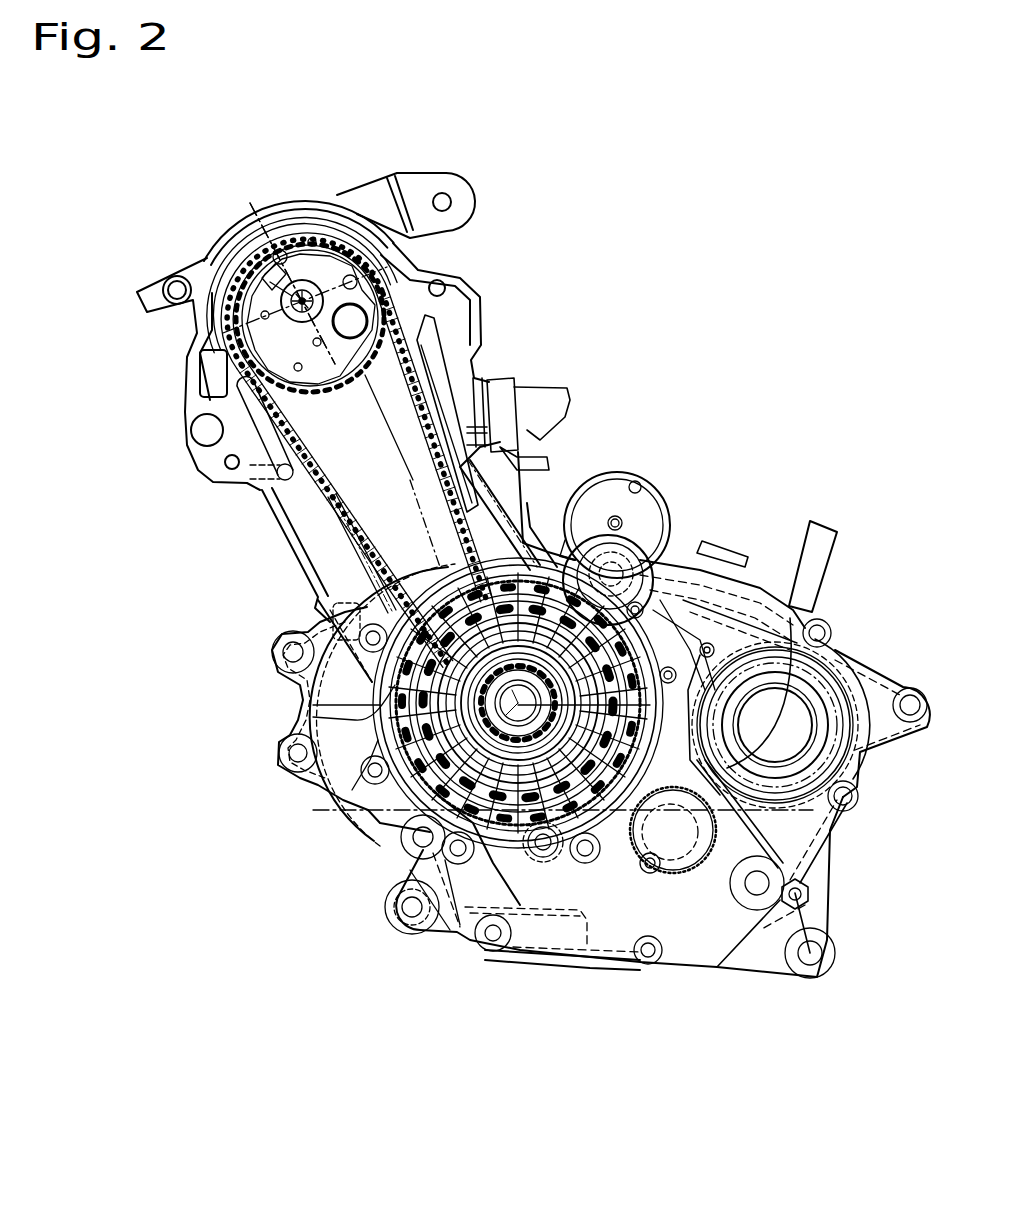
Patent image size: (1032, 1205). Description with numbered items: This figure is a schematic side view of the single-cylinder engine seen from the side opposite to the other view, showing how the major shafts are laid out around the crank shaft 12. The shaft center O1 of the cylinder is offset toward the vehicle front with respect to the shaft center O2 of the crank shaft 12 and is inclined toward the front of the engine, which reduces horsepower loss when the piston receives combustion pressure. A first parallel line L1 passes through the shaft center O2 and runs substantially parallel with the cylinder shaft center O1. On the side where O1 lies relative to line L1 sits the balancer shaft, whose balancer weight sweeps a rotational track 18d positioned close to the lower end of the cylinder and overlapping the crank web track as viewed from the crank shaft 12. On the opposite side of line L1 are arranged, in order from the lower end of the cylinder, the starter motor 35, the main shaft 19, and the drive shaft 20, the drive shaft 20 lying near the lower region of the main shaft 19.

The crank shaft 12 is at (417, 855).
The rotational track of the balancer weight 18d is at (322, 773).
The main shaft 19 is at (713, 647).
The drive shaft 20 is at (817, 717).
The starter motor 35 is at (618, 472).
The first parallel line L1 is at (363, 427).
The shaft center of the cylinder O1 is at (363, 427).
The shaft center of the crank shaft O2 is at (517, 703).